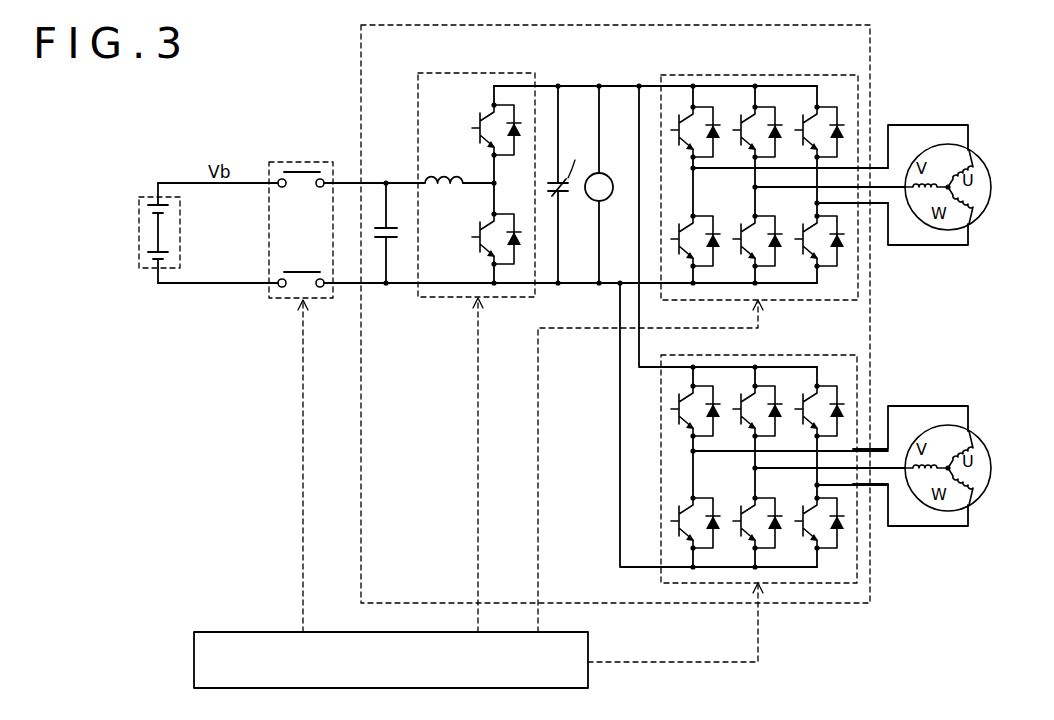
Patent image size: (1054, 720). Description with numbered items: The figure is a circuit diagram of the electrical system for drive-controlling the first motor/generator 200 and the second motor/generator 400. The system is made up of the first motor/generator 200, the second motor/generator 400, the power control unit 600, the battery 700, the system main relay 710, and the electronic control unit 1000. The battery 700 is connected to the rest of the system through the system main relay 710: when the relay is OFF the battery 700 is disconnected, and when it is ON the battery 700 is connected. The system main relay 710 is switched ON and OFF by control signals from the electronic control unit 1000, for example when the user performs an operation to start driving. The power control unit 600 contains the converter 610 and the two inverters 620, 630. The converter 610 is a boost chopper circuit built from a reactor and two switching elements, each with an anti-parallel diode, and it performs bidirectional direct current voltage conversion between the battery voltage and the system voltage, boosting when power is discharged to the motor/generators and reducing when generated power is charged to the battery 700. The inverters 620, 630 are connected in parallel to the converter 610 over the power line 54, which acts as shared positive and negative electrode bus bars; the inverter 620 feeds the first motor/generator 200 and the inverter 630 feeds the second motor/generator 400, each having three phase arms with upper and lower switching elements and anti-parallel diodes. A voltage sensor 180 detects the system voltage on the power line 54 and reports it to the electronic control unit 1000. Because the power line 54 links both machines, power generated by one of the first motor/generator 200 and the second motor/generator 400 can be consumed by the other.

The battery 700 is at (147, 196).
The SMR 710 is at (302, 160).
The PCU 600 is at (360, 60).
The converter 610 is at (476, 72).
The power line 54 is at (618, 83).
The voltage sensor 180 is at (610, 176).
The inverter 630 is at (820, 73).
The inverter 620 is at (818, 354).
The second MG 400 is at (978, 218).
The first MG 200 is at (978, 499).
The ECU 1000 is at (228, 630).